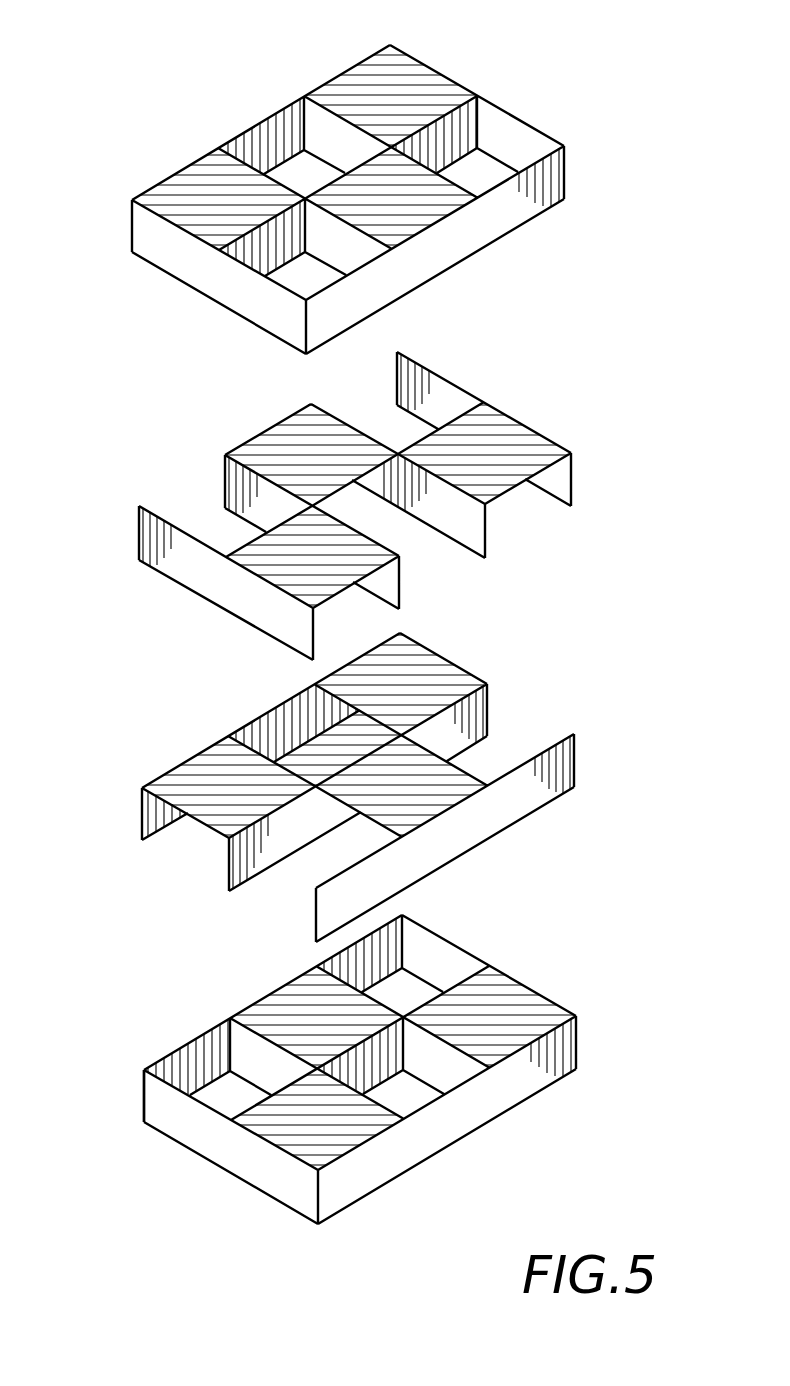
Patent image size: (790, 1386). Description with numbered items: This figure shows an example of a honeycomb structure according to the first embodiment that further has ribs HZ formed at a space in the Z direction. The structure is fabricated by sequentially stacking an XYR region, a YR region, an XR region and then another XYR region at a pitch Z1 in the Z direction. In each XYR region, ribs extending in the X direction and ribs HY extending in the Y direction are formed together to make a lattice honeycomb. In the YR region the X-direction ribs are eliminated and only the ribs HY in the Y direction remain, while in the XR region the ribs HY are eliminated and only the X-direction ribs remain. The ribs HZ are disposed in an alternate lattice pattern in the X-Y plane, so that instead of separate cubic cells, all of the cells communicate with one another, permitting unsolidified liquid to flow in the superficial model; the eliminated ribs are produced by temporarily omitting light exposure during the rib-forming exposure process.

The XYR region XYR is at (422, 627).
The XR region XR is at (411, 506).
The YR region YR is at (413, 787).
The ribs HZ is at (430, 92).
The ribs HY is at (393, 212).
The pitch Z1 is at (105, 1032).